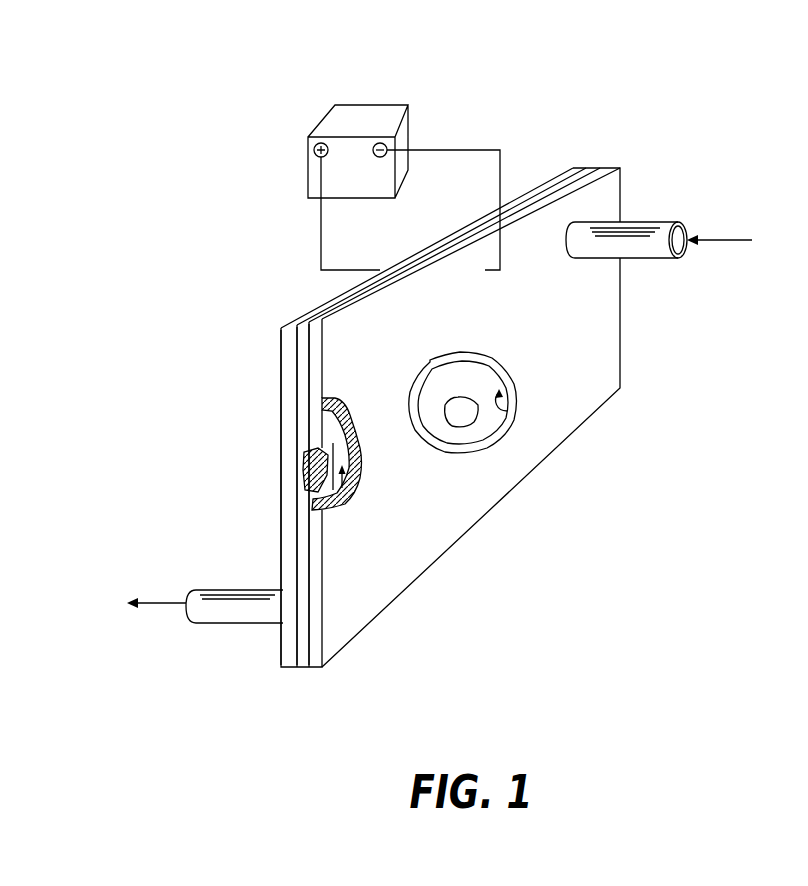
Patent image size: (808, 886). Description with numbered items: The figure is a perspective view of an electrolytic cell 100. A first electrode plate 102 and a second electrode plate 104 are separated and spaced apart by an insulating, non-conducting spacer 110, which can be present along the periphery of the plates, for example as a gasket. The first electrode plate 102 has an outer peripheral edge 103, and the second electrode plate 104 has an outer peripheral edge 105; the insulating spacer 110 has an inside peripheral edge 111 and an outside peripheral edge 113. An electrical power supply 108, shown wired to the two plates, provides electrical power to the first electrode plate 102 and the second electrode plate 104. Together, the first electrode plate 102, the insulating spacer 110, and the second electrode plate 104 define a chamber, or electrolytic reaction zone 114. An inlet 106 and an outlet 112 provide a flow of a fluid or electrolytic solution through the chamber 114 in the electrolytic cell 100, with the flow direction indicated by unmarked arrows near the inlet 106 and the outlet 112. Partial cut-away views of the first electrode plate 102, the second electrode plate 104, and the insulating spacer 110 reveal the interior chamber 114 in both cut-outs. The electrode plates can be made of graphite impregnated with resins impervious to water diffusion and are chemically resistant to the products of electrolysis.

The electrolytic cell 100 is at (716, 144).
The first electrode plate 102 is at (323, 667).
The outer peripheral edge 103 is at (615, 168).
The second electrode plate 104 is at (283, 365).
The outer peripheral edge 105 is at (573, 168).
The inlet 106 is at (645, 257).
The electrical power supply 108 is at (412, 128).
The insulating spacer 110 is at (308, 477).
The inside peripheral edge 111 is at (332, 445).
The outlet 112 is at (228, 625).
The outside peripheral edge 113 is at (302, 447).
The electrolytic reaction zone 114 is at (355, 504).